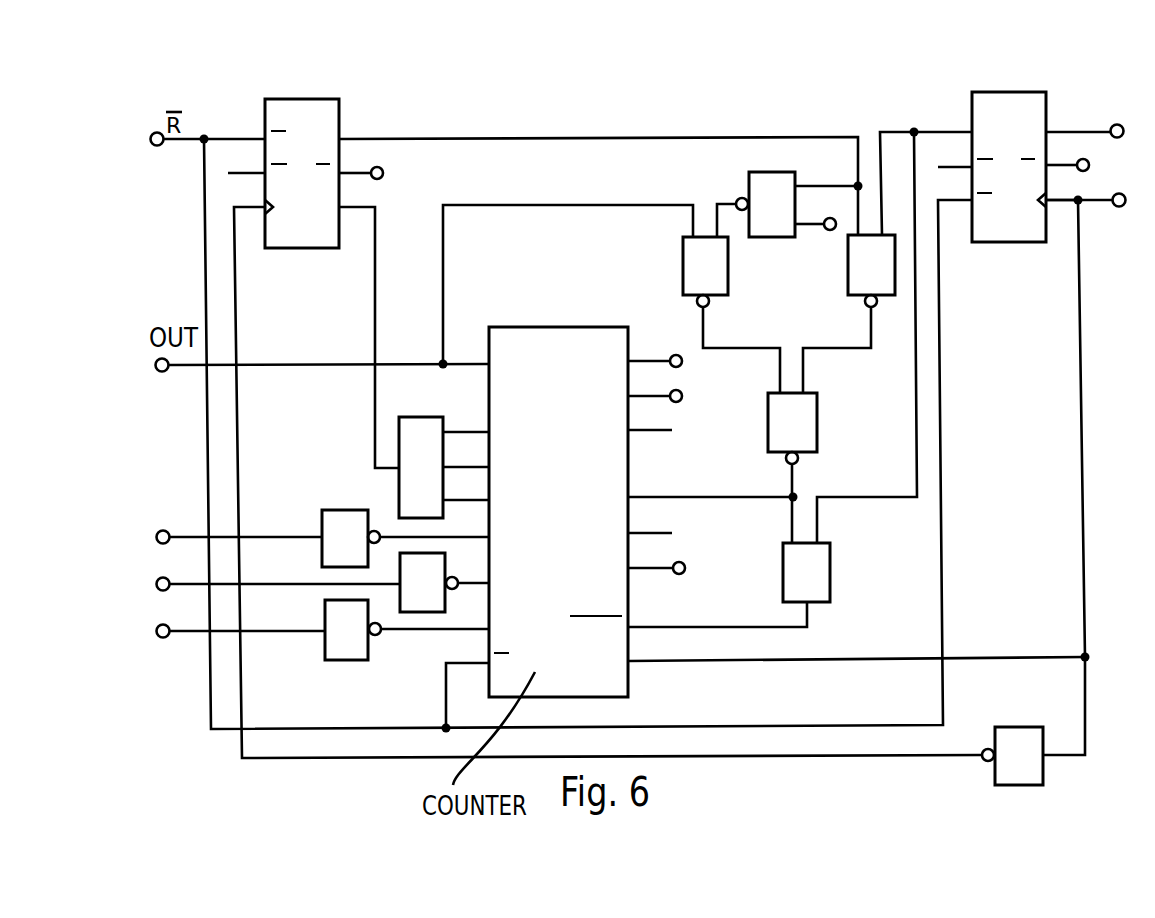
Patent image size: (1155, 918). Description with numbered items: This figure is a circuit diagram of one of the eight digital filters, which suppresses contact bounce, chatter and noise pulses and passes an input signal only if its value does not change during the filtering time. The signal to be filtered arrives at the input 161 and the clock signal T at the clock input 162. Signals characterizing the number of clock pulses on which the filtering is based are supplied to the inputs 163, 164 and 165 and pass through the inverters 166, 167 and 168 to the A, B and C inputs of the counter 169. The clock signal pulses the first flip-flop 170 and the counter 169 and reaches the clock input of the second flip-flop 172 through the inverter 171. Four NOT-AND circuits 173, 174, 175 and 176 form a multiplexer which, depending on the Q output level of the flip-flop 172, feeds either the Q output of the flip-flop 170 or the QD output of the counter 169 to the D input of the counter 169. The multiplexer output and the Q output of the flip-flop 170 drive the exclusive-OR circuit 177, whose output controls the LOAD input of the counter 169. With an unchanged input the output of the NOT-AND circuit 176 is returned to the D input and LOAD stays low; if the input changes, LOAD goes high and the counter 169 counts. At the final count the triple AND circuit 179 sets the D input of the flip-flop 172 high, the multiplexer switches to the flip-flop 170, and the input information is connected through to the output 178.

The input 161 is at (1126, 100).
The clock signal input 162 is at (1122, 207).
The input 163 is at (184, 500).
The input 164 is at (178, 582).
The input 165 is at (160, 638).
The inverter 166 is at (352, 512).
The inverter 167 is at (428, 607).
The inverter 168 is at (357, 661).
The counter 169 is at (552, 345).
The first flip-flop 170 is at (1028, 102).
The inverter 171 is at (1030, 736).
The second flip-flop 172 is at (322, 110).
The NOT-AND circuit 173 is at (758, 181).
The NOT-AND circuit 174 is at (683, 266).
The NOT-AND circuit 175 is at (851, 279).
The NOT-AND circuit 176 is at (808, 443).
The exclusive-OR circuit 177 is at (820, 588).
The output 178 is at (160, 372).
The triple AND circuit 179 is at (440, 398).